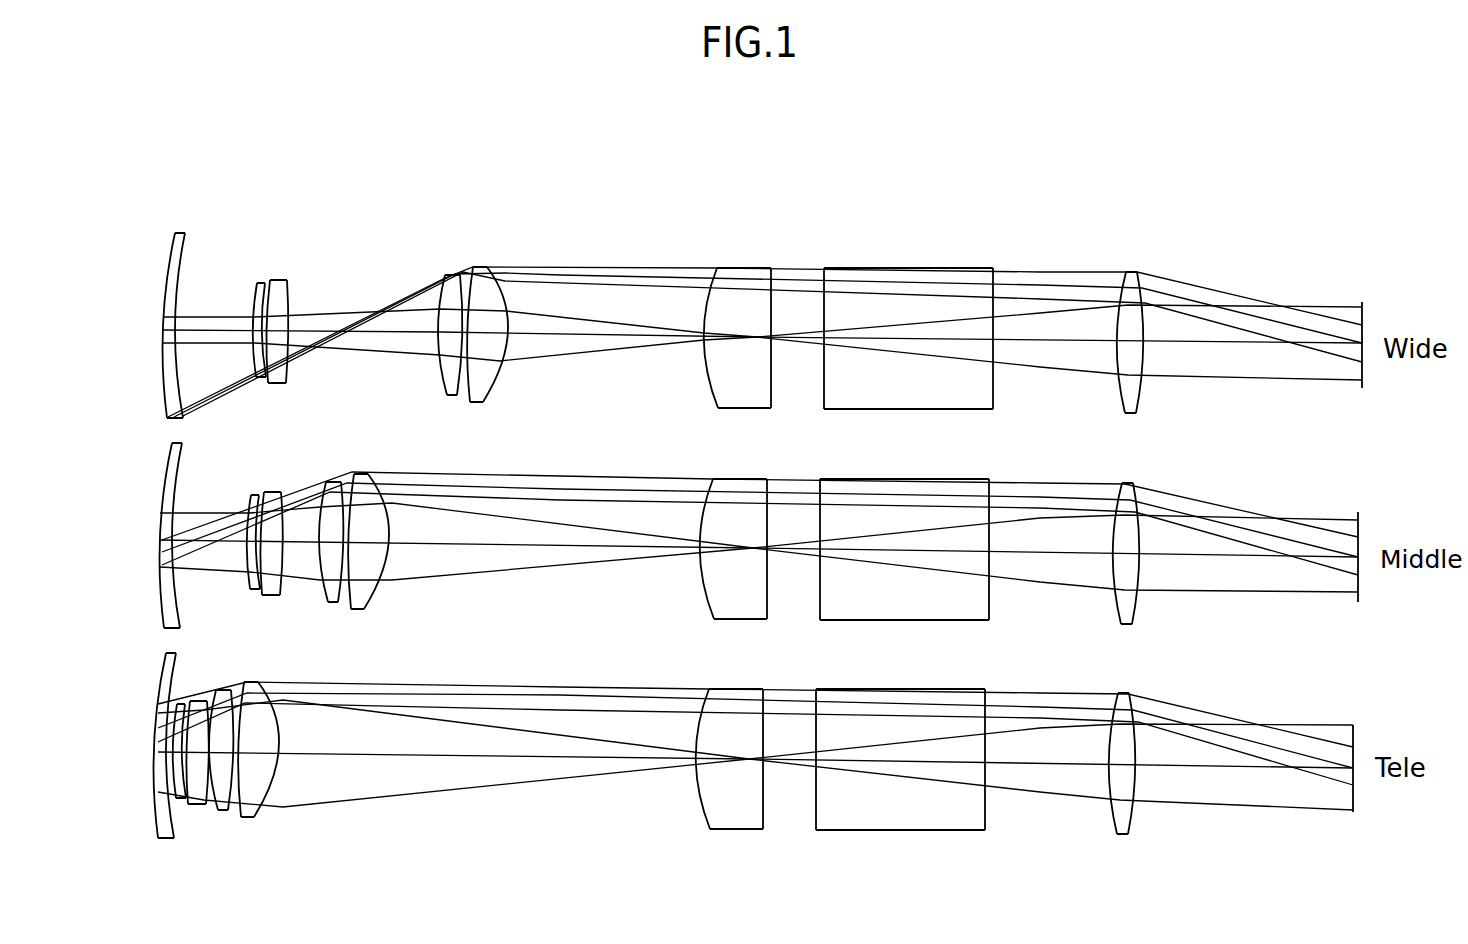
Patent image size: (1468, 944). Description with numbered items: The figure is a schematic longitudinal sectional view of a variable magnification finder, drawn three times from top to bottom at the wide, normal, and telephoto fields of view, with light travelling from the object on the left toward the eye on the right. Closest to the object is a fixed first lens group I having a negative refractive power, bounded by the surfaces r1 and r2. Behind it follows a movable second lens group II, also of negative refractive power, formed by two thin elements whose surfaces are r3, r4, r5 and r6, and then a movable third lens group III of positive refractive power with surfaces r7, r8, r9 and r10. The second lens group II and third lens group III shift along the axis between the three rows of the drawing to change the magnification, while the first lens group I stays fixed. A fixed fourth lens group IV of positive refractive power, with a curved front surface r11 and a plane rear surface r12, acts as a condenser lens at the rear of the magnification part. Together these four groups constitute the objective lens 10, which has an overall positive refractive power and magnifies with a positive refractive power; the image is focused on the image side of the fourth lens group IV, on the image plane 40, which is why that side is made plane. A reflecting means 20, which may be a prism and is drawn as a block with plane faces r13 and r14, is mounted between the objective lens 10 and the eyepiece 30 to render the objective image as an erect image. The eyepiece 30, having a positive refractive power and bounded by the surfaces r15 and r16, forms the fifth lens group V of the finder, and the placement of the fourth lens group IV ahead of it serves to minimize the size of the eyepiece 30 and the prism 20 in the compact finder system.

The objective lens 10 is at (795, 163).
The reflecting means 20 is at (1027, 207).
The eyepiece 30 is at (1177, 172).
The image plane 40 is at (1354, 269).
The first lens group I is at (212, 201).
The second lens group II is at (317, 201).
The third lens group III is at (535, 201).
The fourth lens group IV is at (793, 207).
The fifth lens group V is at (1177, 212).
The lens surface R1 r1 is at (162, 310).
The lens surface R2 r2 is at (192, 310).
The lens surface R3 r3 is at (238, 289).
The lens surface R4 r4 is at (255, 289).
The lens surface R5 r5 is at (277, 292).
The lens surface R6 r6 is at (301, 292).
The lens surface R7 r7 is at (436, 298).
The lens surface R8 r8 is at (460, 298).
The lens surface R9 r9 is at (481, 302).
The lens surface R10 r10 is at (508, 302).
The lens surface R11 r11 is at (704, 305).
The lens surface R12 r12 is at (781, 305).
The surface R13 r13 is at (821, 305).
The surface R14 r14 is at (1009, 305).
The lens surface R15 r15 is at (1112, 307).
The lens surface R16 r16 is at (1151, 307).